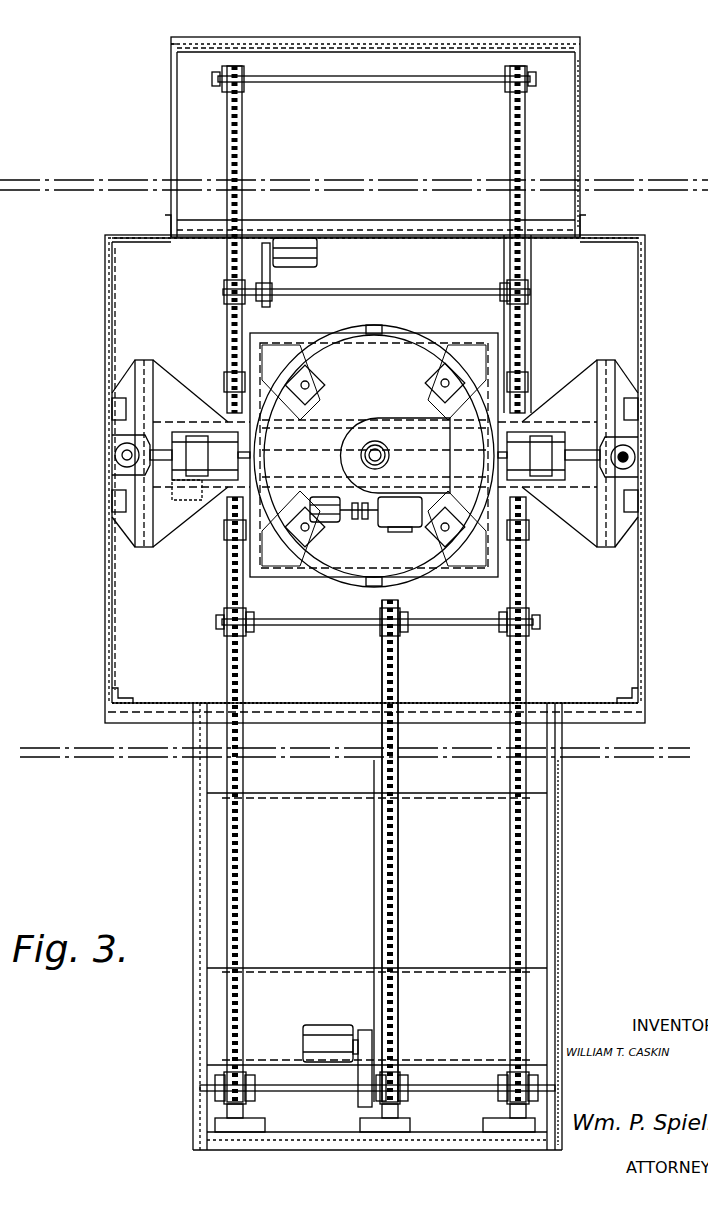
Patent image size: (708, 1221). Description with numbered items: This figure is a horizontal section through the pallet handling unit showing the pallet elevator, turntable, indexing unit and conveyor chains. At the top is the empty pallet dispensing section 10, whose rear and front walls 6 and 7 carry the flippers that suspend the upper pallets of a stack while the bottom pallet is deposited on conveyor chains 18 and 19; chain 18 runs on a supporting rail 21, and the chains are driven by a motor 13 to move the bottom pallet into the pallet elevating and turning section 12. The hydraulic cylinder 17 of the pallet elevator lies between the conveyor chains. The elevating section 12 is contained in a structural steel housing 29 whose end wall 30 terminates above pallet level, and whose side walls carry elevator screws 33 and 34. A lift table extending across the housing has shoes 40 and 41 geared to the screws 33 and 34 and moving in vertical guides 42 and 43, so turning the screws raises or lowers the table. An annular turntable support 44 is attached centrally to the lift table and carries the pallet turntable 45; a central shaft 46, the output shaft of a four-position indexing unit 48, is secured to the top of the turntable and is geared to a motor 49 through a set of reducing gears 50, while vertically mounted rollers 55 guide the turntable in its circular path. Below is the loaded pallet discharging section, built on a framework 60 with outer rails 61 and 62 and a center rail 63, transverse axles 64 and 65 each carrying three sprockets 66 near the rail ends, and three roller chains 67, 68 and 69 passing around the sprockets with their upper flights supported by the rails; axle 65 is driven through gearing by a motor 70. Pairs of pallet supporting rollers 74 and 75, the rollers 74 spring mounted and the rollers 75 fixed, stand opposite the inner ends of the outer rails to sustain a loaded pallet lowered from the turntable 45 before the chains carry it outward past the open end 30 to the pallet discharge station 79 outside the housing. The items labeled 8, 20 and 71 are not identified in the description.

The rear wall 6 is at (171, 73).
The front wall 7 is at (580, 135).
The top plate 8 is at (370, 50).
The empty pallet dispensing section 10 is at (170, 100).
The pallet elevating and turning section 12 is at (105, 676).
The motor 13 is at (318, 260).
The hydraulic cylinder 17 is at (425, 290).
The conveyor chain 18 is at (512, 106).
The conveyor chain 19 is at (243, 130).
The chain guide 20 is at (532, 313).
The supporting rail 21 is at (510, 153).
The structural steel housing 29 is at (105, 320).
The end wall 30 is at (190, 236).
The elevator screw 33 is at (636, 457).
The elevator screw 34 is at (113, 462).
The shoe 40 is at (568, 453).
The shoe 41 is at (181, 453).
The vertical guide 42 is at (640, 406).
The vertical guide 43 is at (112, 406).
The annular turntable support 44 is at (405, 334).
The pallet turntable 45 is at (294, 338).
The central shaft 46 is at (362, 458).
The four-position indexing unit 48 is at (374, 455).
The motor 49 is at (335, 523).
The reducing gears 50 is at (400, 514).
The vertically mounted rollers 55 is at (320, 383).
The framework 60 is at (562, 983).
The outer rail 61 is at (510, 935).
The outer rail 62 is at (244, 893).
The center rail 63 is at (400, 893).
The transverse axle 64 is at (328, 626).
The transverse axle 65 is at (447, 1092).
The sprockets 66 is at (399, 602).
The roller chain 67 is at (224, 608).
The roller chain 68 is at (381, 688).
The roller chain 69 is at (530, 642).
The motor 70 is at (325, 1028).
The base 71 is at (192, 1051).
The pallet supporting rollers 74 is at (215, 482).
The pallet supporting rollers 75 is at (212, 445).
The pallet discharge station 79 is at (563, 936).